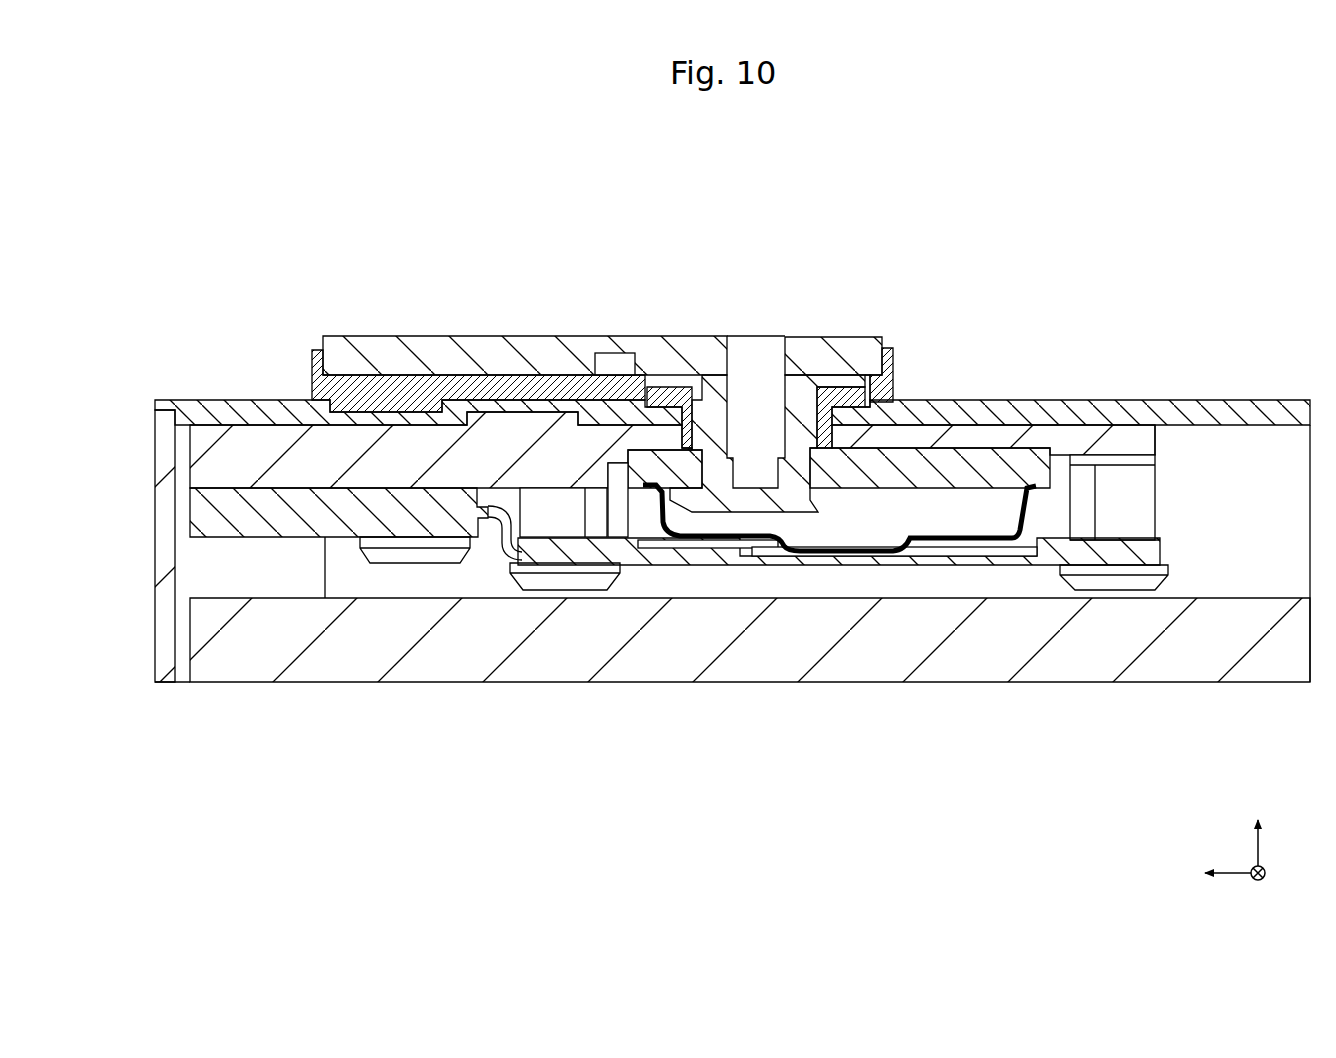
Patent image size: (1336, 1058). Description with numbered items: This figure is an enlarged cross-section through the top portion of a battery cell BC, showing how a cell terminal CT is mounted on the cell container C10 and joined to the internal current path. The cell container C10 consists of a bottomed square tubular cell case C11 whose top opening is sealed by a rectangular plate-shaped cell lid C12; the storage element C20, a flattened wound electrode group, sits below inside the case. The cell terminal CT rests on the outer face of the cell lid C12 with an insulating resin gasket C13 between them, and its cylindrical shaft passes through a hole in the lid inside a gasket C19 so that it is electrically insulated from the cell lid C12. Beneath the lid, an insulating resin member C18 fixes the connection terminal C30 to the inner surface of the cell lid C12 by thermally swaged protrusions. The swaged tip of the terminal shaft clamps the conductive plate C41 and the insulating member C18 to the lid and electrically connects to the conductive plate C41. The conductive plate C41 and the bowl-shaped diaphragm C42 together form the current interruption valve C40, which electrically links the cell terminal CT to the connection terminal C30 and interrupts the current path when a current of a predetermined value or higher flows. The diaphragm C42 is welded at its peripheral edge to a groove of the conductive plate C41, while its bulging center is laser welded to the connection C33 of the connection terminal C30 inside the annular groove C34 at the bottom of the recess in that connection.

The battery cell BC is at (1075, 223).
The cell terminal CT is at (330, 299).
The cell container C10 is at (1257, 361).
The cell case C11 is at (156, 450).
The cell lid C12 is at (1160, 408).
The resin gasket C13 is at (312, 380).
The insulating resin member C18 is at (242, 458).
The gasket C19 is at (845, 390).
The storage element C20 is at (1248, 612).
The connection terminal C30 is at (205, 508).
The connection C33 is at (1160, 551).
The annular groove C34 is at (866, 548).
The current interruption valve C40 is at (1160, 746).
The conductive plate C41 is at (1035, 523).
The diaphragm C42 is at (1055, 472).